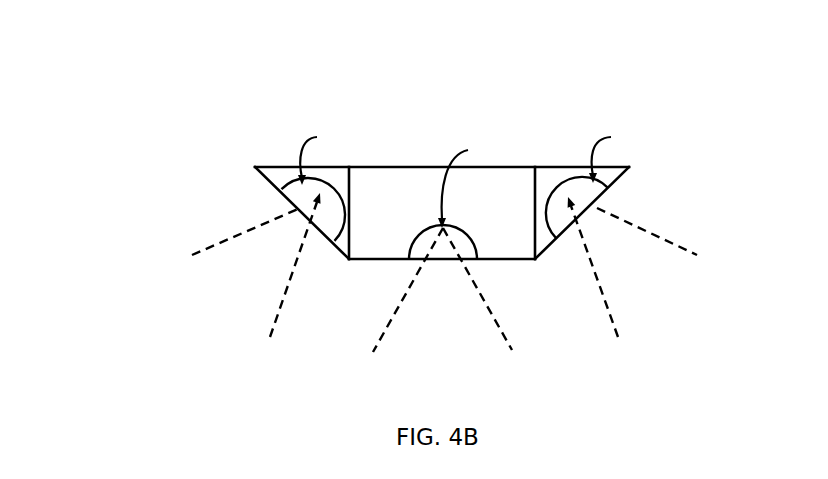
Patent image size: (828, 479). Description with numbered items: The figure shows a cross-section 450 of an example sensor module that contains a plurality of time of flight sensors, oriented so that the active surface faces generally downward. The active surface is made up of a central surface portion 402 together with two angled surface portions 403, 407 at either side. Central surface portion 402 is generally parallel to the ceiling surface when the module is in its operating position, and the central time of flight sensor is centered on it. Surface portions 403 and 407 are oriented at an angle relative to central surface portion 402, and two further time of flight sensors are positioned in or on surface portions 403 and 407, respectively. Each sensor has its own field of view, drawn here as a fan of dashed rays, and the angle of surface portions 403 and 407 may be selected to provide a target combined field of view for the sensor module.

The cross-section 450 is at (106, 60).
The surface portion 407 is at (260, 188).
The surface portion 403 is at (623, 191).
The central surface portion 402 is at (373, 271).